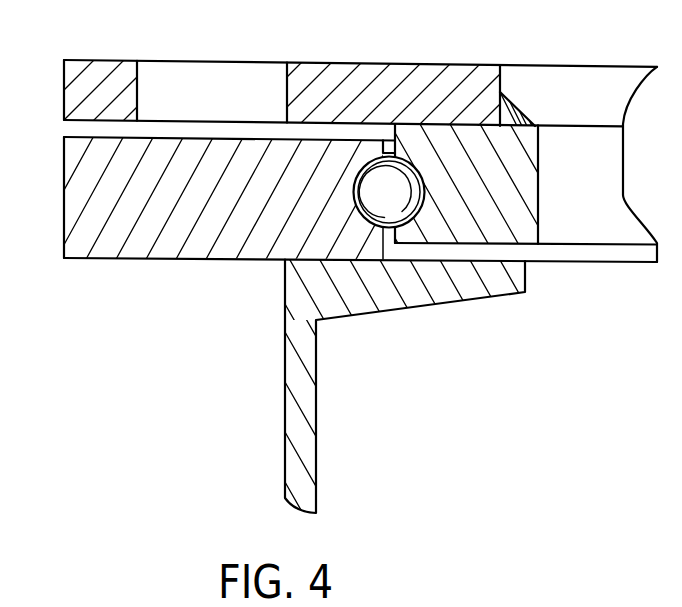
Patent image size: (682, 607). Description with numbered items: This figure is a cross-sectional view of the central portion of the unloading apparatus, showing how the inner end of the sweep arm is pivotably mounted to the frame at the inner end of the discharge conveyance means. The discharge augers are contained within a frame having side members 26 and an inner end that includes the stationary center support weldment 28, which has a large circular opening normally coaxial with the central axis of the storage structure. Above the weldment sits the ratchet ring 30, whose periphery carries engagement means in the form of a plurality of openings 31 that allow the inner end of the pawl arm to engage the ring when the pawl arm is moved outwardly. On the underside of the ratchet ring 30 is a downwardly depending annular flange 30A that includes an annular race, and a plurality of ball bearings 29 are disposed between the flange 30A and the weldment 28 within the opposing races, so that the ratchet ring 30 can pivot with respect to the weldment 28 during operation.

The side member 26 is at (310, 363).
The center support weldment 28 is at (194, 250).
The ball bearing 29 is at (390, 228).
The ratchet ring 30 is at (63, 75).
The annular flange 30A is at (537, 206).
The opening 31 is at (138, 68).